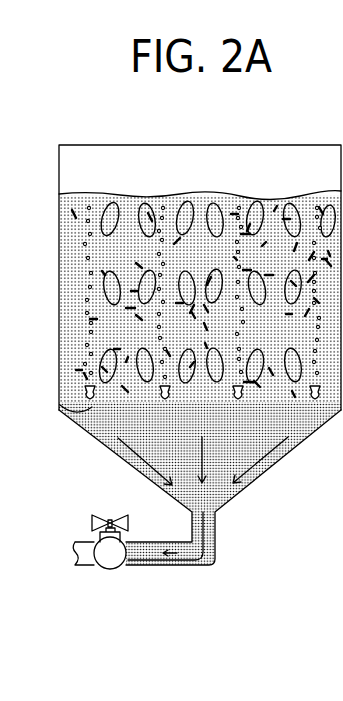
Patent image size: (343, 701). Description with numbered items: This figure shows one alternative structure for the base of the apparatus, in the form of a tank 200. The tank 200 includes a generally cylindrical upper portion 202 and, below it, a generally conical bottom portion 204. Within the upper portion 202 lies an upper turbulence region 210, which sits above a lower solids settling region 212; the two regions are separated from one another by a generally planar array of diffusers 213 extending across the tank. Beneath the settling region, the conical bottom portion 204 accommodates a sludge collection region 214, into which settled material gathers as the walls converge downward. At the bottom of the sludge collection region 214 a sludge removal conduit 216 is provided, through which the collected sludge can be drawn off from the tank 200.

The tank 200 is at (85, 145).
The upper portion 202 is at (58, 216).
The bottom portion 204 is at (82, 428).
The upper turbulence region 210 is at (108, 264).
The lower solids settling region 212 is at (60, 405).
The array of diffusers 213 is at (160, 390).
The sludge collection region 214 is at (237, 445).
The sludge removal conduit 216 is at (126, 565).